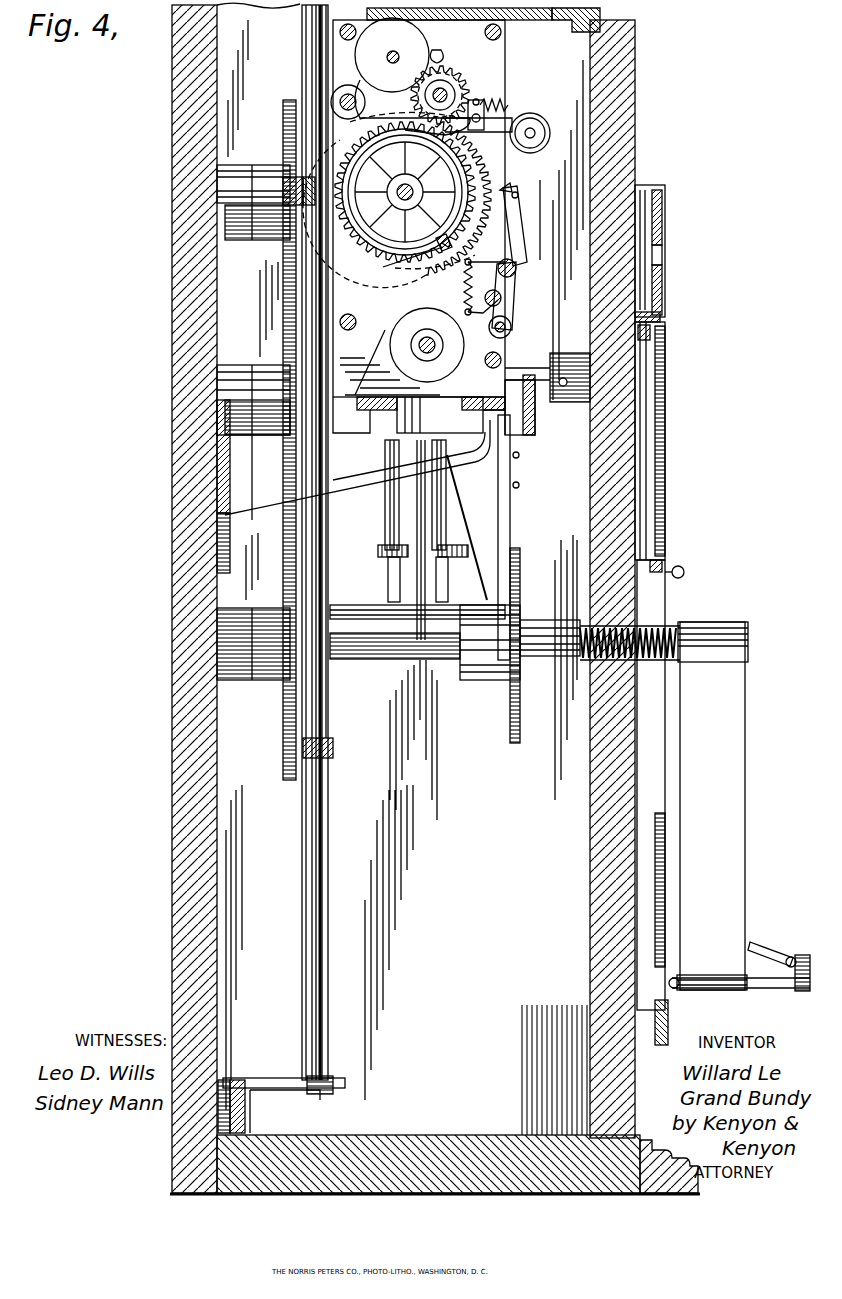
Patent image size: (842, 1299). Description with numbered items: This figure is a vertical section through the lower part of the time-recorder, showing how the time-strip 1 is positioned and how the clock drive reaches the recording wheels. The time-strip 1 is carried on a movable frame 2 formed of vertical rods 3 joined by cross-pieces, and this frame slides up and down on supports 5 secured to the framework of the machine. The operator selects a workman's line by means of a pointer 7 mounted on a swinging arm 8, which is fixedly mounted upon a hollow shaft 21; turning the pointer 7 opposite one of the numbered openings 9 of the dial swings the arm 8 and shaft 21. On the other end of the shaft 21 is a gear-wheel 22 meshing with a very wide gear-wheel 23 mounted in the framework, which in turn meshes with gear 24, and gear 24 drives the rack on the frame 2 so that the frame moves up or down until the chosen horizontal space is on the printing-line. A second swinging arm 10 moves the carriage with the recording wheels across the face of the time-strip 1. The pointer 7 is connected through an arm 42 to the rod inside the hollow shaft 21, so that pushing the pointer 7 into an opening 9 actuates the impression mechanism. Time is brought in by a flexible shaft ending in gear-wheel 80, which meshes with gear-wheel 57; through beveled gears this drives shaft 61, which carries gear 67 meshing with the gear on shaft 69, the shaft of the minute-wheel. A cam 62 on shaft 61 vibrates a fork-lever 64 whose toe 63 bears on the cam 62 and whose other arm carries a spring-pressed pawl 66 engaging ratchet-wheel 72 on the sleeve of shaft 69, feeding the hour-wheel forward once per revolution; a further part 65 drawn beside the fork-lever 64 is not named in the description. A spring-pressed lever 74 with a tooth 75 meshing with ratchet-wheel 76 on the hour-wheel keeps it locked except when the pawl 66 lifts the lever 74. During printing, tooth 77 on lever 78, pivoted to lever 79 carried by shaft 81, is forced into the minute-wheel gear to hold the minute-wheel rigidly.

The time-strip 1 is at (330, 462).
The movable frame 2 is at (283, 190).
The vertical rods 3 is at (320, 712).
The supports 5 is at (330, 925).
The pointer 7 is at (798, 955).
The swinging arm 8 is at (712, 806).
The openings 9 is at (668, 254).
The swinging arm 10 is at (668, 428).
The shaft 21 is at (362, 640).
The gear-wheel 22 is at (290, 780).
The gear-wheel 23 is at (285, 312).
The gear 24 is at (290, 115).
The arm 42 is at (762, 947).
The gear-wheel 57 is at (462, 560).
The shaft 61 is at (445, 90).
The cam 62 is at (452, 80).
The toe 63 is at (440, 52).
The fork-lever 64 is at (372, 105).
The roller 65 is at (348, 98).
The spring-pressed pawl 66 is at (480, 150).
The gear 67 is at (478, 90).
The shaft 69 is at (420, 192).
The ratchet-wheel 72 is at (510, 190).
The spring-pressed lever 74 is at (398, 282).
The tooth 75 is at (462, 280).
The ratchet-wheel 76 is at (395, 193).
The tooth 77 is at (520, 193).
The lever 78 is at (522, 222).
The lever 79 is at (508, 294).
The gear-wheel 80 is at (387, 556).
The shaft 81 is at (511, 325).